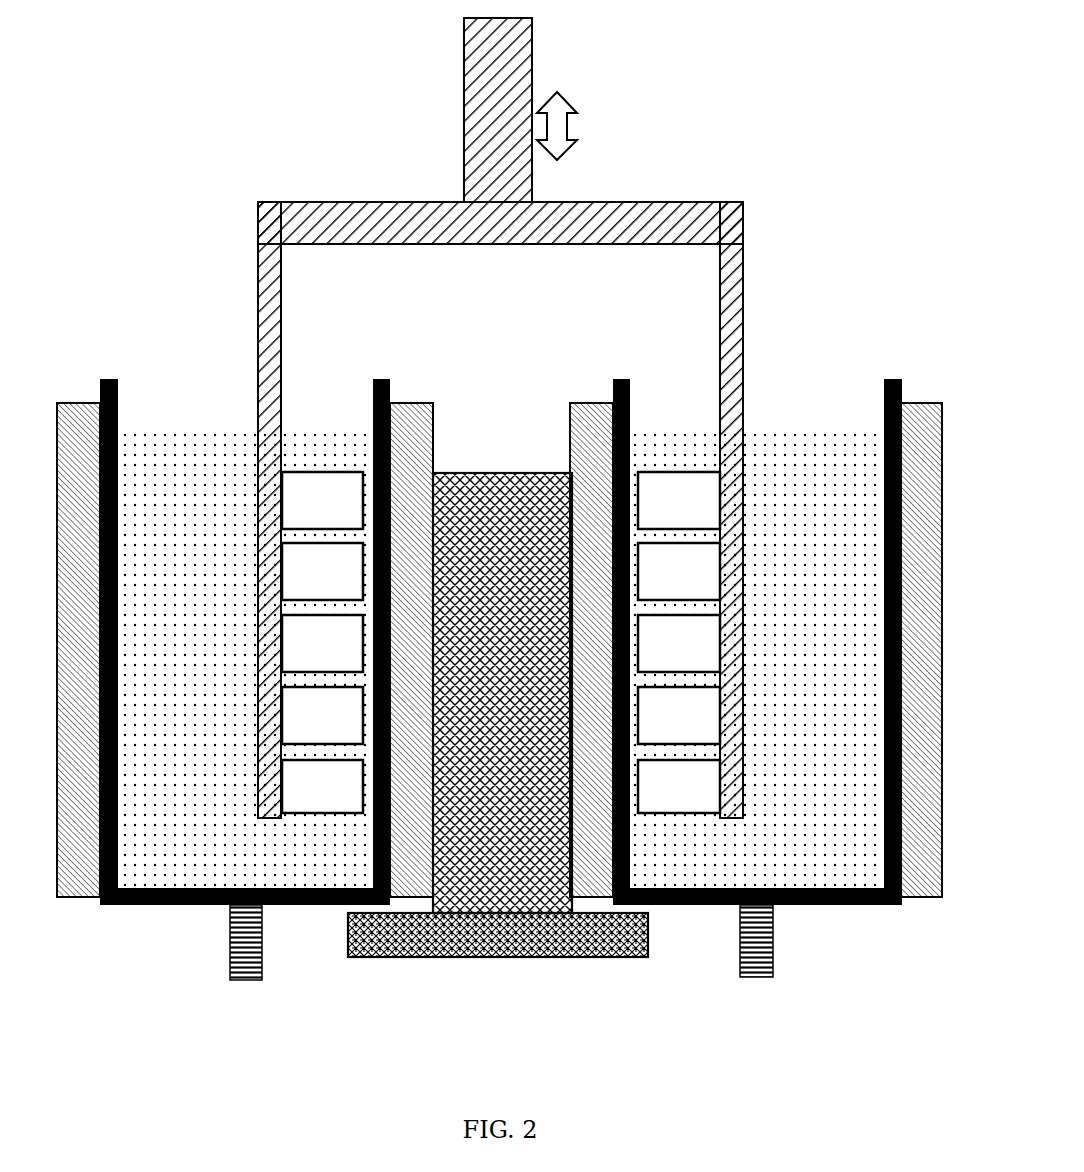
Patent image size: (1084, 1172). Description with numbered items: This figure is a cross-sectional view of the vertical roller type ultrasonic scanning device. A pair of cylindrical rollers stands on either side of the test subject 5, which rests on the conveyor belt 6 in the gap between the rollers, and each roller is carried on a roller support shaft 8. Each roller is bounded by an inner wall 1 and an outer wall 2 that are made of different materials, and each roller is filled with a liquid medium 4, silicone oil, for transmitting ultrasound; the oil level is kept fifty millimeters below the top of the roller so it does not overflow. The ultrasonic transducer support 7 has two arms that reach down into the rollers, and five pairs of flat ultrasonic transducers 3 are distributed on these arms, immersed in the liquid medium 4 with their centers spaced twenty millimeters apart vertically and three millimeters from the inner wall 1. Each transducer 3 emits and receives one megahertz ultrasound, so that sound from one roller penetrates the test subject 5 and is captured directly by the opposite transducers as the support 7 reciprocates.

The inner wall of the roller 1 is at (370, 403).
The outer wall of the roller 2 is at (404, 400).
The ultrasonic transducer 3 is at (501, 642).
The liquid medium 4 is at (501, 660).
The test subject 5 is at (502, 693).
The conveyor belt 6 is at (577, 940).
The ultrasonic transducer support 7 is at (464, 157).
The roller support shaft 8 is at (242, 982).